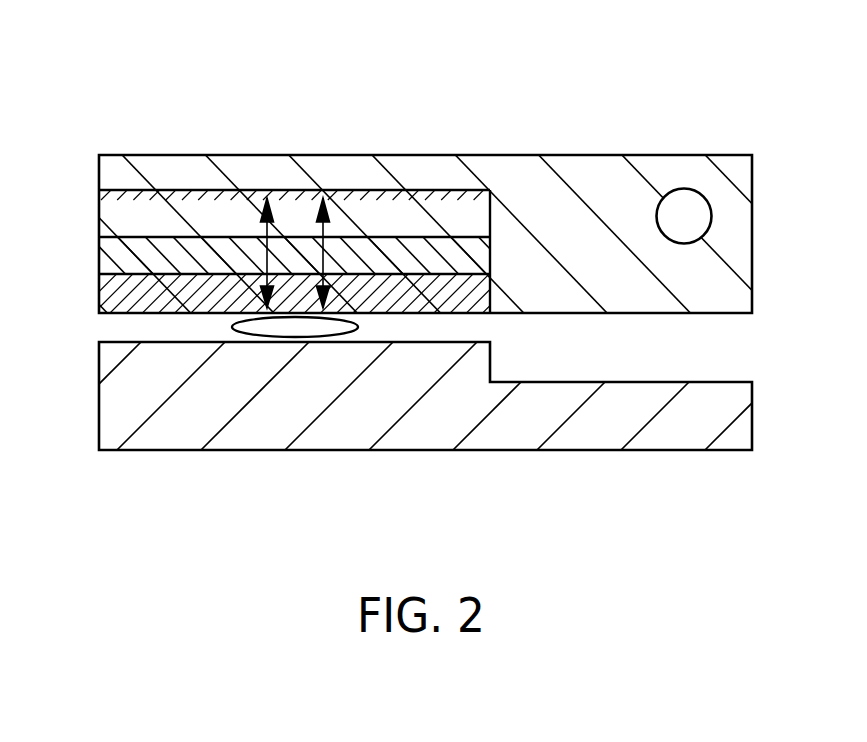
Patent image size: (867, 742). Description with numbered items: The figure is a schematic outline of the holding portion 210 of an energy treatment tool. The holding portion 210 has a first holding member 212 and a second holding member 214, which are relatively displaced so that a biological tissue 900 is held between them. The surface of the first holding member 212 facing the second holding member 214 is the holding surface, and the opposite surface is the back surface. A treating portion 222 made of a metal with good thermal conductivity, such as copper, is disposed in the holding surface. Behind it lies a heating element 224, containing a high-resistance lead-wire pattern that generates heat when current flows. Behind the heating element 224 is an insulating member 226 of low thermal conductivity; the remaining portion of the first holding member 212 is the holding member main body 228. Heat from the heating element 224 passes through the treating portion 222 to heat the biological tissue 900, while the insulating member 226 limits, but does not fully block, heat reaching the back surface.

The holding portion 210 is at (433, 286).
The first holding member 212 is at (433, 193).
The second holding member 214 is at (301, 486).
The treating portion 222 is at (113, 294).
The heating element 224 is at (113, 253).
The insulating member 226 is at (113, 213).
The holding member main body 228 is at (113, 172).
The biological tissue 900 is at (232, 328).